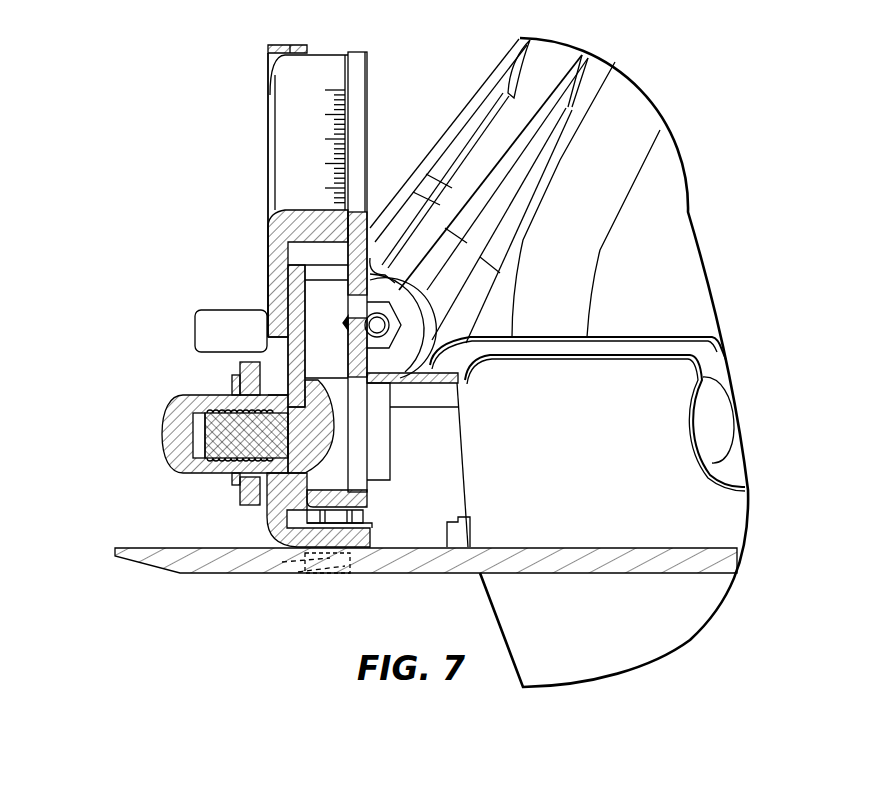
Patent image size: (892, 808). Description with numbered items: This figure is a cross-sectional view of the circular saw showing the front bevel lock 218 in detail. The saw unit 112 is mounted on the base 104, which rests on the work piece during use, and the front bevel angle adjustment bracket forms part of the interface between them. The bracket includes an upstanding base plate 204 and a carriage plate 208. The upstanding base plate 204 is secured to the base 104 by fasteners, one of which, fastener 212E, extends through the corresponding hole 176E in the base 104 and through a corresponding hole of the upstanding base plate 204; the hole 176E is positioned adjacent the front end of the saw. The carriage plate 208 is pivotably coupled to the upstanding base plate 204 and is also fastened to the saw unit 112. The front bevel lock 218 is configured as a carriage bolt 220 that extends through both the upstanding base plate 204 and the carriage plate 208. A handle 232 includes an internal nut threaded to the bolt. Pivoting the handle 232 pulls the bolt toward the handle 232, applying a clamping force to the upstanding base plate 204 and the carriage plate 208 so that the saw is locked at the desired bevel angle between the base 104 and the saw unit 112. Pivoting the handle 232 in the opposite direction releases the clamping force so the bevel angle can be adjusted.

The base 104 is at (150, 560).
The saw unit 112 is at (612, 133).
The hole 176E is at (287, 553).
The upstanding base plate 204 is at (277, 347).
The carriage plate 208 is at (347, 253).
The fastener 212E is at (330, 573).
The front bevel lock 218 is at (138, 428).
The carriage bolt 220 is at (237, 458).
The handle 232 is at (248, 368).